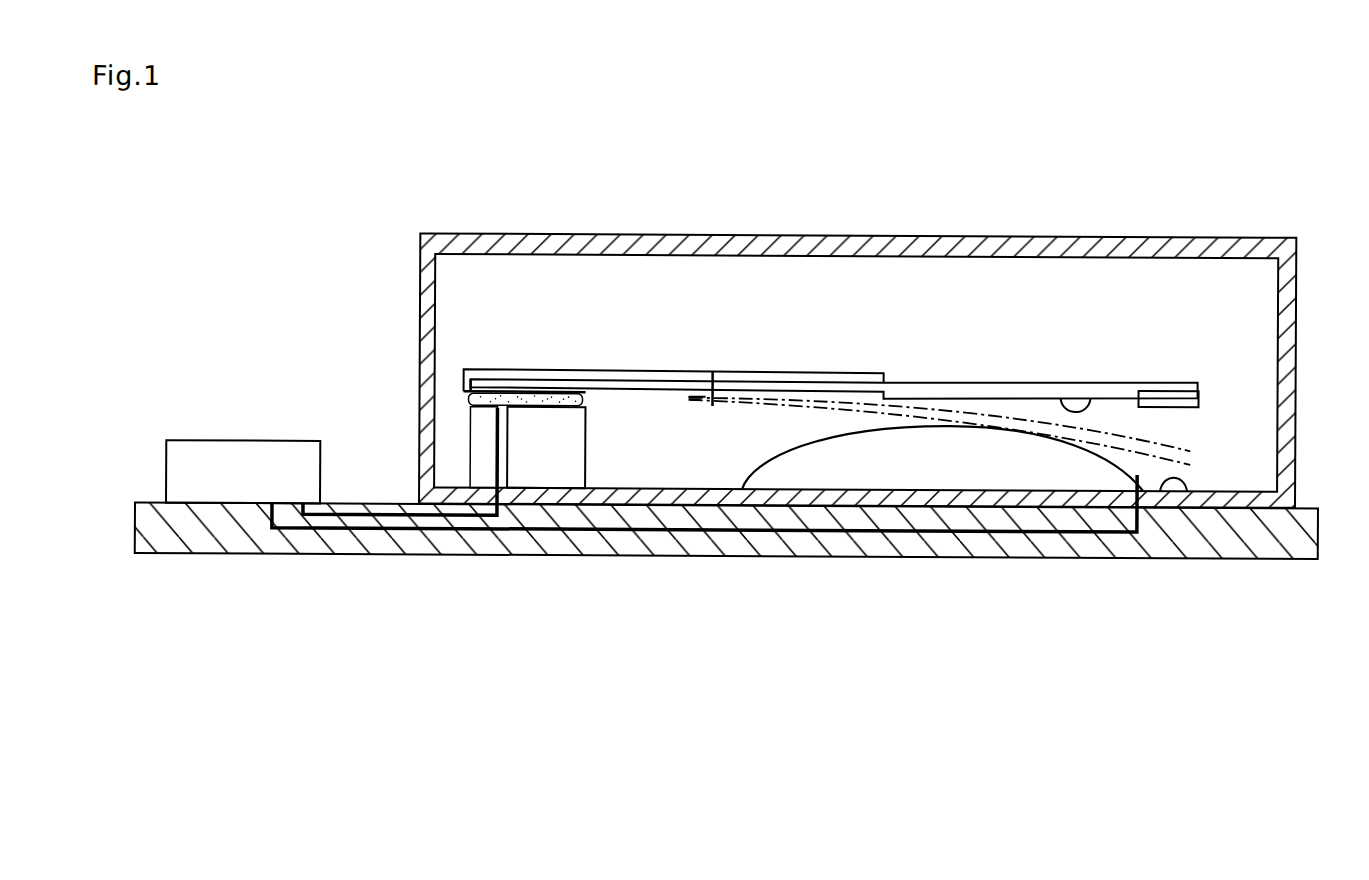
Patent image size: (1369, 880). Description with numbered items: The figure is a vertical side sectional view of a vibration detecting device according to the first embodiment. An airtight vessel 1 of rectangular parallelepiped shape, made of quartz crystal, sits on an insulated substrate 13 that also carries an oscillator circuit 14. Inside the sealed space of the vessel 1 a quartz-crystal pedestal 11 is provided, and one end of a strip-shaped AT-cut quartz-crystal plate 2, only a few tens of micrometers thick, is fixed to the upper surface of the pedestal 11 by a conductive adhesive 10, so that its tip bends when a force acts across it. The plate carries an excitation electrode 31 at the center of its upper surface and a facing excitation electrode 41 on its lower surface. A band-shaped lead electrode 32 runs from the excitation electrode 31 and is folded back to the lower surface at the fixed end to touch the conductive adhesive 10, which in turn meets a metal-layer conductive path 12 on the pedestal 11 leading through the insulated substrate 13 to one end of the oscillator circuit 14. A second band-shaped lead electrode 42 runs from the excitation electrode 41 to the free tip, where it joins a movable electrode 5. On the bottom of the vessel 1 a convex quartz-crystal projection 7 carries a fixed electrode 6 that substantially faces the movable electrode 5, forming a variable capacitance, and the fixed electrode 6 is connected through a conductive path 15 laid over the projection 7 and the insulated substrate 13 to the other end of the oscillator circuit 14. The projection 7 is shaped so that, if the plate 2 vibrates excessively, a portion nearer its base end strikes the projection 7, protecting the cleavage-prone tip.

The airtight vessel 1 is at (1203, 231).
The quartz-crystal plate 2 is at (830, 323).
The movable electrode 5 is at (1185, 403).
The fixed electrode 6 is at (1183, 473).
The projection 7 is at (851, 478).
The conductive adhesive 10 is at (480, 396).
The pedestal 11 is at (582, 466).
The conductive path 12 is at (358, 512).
The insulated substrate 13 is at (198, 553).
The oscillator circuit 14 is at (246, 439).
The conductive path 15 is at (925, 529).
The excitation electrode 31 is at (788, 367).
The lead electrode 32 is at (567, 368).
The excitation electrode 41 is at (724, 397).
The lead electrode 42 is at (1096, 393).